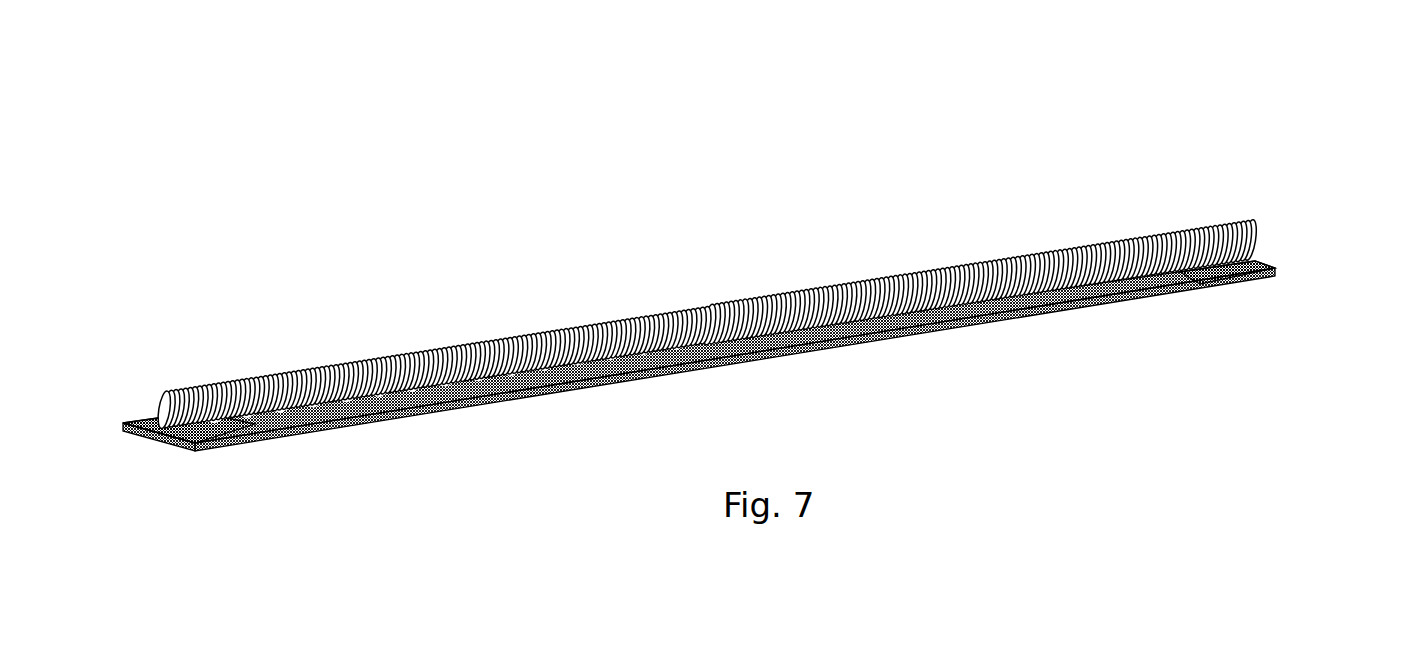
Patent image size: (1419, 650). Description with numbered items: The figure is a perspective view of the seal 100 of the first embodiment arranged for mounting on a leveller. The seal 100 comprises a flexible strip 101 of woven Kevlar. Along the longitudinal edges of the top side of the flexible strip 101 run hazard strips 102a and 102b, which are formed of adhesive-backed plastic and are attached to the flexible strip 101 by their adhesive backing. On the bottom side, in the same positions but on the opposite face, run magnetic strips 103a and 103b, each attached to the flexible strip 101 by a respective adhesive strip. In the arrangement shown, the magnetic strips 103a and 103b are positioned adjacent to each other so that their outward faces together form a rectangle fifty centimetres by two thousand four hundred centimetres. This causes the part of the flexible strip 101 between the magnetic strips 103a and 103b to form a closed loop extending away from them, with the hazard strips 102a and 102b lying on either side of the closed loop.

The seal 100 is at (1140, 152).
The flexible strip 101 is at (1231, 217).
The hazard strip 102a is at (1258, 262).
The hazard strip 102b is at (148, 416).
The magnetic strip 103a is at (183, 447).
The magnetic strip 103b is at (135, 436).